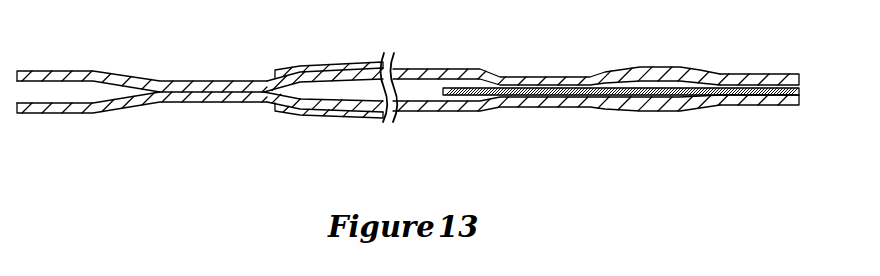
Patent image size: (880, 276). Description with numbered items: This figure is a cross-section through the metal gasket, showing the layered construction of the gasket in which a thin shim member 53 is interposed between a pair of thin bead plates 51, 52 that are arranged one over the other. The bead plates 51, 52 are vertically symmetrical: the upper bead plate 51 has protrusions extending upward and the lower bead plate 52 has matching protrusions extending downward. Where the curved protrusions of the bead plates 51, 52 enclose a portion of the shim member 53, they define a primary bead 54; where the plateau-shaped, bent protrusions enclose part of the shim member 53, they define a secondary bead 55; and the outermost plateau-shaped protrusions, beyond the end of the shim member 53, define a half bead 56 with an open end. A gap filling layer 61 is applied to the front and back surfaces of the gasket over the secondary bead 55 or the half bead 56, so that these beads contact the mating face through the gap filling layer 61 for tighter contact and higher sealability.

The bead plate 51 is at (734, 74).
The bead plate 52 is at (730, 107).
The shim member 53 is at (801, 89).
The primary bead 54 is at (669, 49).
The secondary bead 55 is at (454, 44).
The half bead 56 is at (75, 47).
The gap filling layer 61 is at (362, 62).